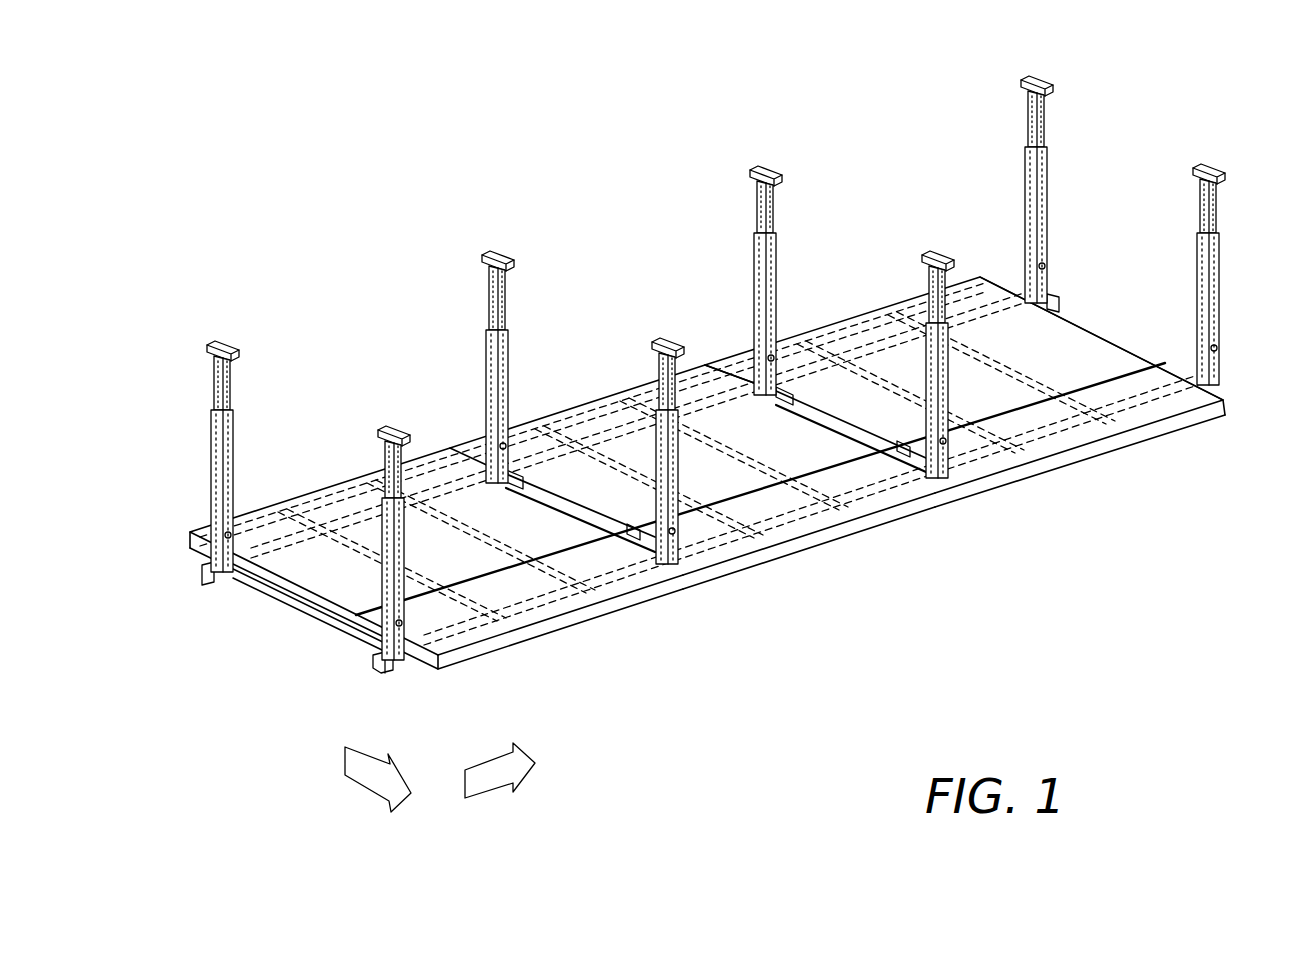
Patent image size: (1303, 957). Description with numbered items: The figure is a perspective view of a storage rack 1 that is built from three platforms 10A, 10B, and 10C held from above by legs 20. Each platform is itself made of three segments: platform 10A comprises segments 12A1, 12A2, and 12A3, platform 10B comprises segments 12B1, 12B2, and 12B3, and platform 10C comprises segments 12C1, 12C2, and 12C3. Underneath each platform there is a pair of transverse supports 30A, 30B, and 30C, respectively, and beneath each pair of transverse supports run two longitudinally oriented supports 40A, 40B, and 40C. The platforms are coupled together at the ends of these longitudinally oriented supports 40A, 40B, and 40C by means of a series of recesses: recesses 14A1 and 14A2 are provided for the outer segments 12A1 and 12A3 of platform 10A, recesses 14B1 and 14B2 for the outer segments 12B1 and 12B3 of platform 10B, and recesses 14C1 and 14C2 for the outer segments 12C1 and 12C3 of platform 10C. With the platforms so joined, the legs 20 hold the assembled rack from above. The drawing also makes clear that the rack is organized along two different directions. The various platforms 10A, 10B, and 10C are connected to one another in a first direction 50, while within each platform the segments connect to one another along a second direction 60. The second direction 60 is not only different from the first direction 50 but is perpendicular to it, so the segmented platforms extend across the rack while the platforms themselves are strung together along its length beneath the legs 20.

The storage rack 1 is at (311, 152).
The platform 10A is at (371, 470).
The platform 10B is at (640, 383).
The platform 10C is at (921, 298).
The segment 12A1 is at (265, 570).
The segment 12A2 is at (340, 617).
The segment 12A3 is at (373, 633).
The segment 12B1 is at (475, 445).
The segment 12B2 is at (607, 503).
The segment 12B3 is at (737, 488).
The segment 12C1 is at (755, 365).
The segment 12C2 is at (880, 417).
The segment 12C3 is at (1010, 478).
The recess 14A1 is at (247, 568).
The recess 14A2 is at (480, 470).
The recess 14B1 is at (513, 425).
The recess 14B2 is at (757, 387).
The recess 14C1 is at (790, 365).
The recess 14C2 is at (1027, 296).
The legs 20 is at (487, 256).
The transverse supports 30A is at (517, 637).
The transverse supports 30B is at (832, 520).
The transverse supports 30C is at (1142, 430).
The longitudinally oriented supports 40A is at (343, 523).
The longitudinally oriented supports 40B is at (727, 545).
The longitudinally oriented supports 40C is at (890, 348).
The first direction 50 is at (493, 783).
The second direction 60 is at (368, 773).